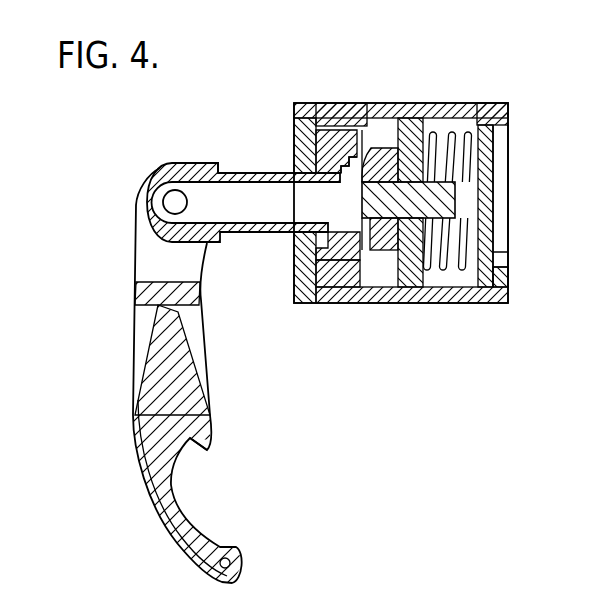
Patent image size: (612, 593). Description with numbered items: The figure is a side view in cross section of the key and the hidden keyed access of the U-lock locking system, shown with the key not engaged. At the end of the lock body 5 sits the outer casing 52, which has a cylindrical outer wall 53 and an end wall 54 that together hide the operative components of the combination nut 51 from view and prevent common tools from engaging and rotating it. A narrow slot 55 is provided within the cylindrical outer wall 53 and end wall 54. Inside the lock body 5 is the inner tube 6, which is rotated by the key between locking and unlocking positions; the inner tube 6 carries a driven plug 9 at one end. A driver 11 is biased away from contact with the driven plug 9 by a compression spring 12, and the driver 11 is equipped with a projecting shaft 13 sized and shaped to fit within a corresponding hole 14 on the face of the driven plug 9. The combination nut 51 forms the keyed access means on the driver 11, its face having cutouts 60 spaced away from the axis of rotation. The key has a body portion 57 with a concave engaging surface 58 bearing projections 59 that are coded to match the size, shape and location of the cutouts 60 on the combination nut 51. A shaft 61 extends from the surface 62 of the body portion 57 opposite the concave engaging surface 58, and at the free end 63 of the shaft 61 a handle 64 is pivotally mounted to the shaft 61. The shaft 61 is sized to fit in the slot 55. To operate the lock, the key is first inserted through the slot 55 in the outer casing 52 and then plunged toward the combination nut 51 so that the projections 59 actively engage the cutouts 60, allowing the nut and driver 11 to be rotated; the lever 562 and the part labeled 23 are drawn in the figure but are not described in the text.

The lock body 5 is at (457, 104).
The inner tube 6 is at (500, 133).
The driven plug 9 is at (496, 266).
The driver 11 is at (428, 274).
The compression spring 12 is at (433, 126).
The projecting shaft 13 is at (452, 212).
The hole 14 is at (487, 201).
The lower slider arm 23 is at (392, 292).
The combination nut 51 is at (373, 150).
The outer casing 52 is at (322, 317).
The cylindrical outer wall 53 is at (320, 104).
The end wall 54 is at (300, 112).
The narrow slot 55 is at (298, 232).
The body portion 57 is at (305, 285).
The concave engaging surface 58 is at (330, 252).
The projections 59 is at (344, 172).
The cutouts 60 is at (398, 152).
The shaft 61 is at (235, 218).
The surface 62 is at (297, 145).
The free end 63 is at (188, 163).
The handle 64 is at (200, 422).
The lever handle 562 is at (128, 307).